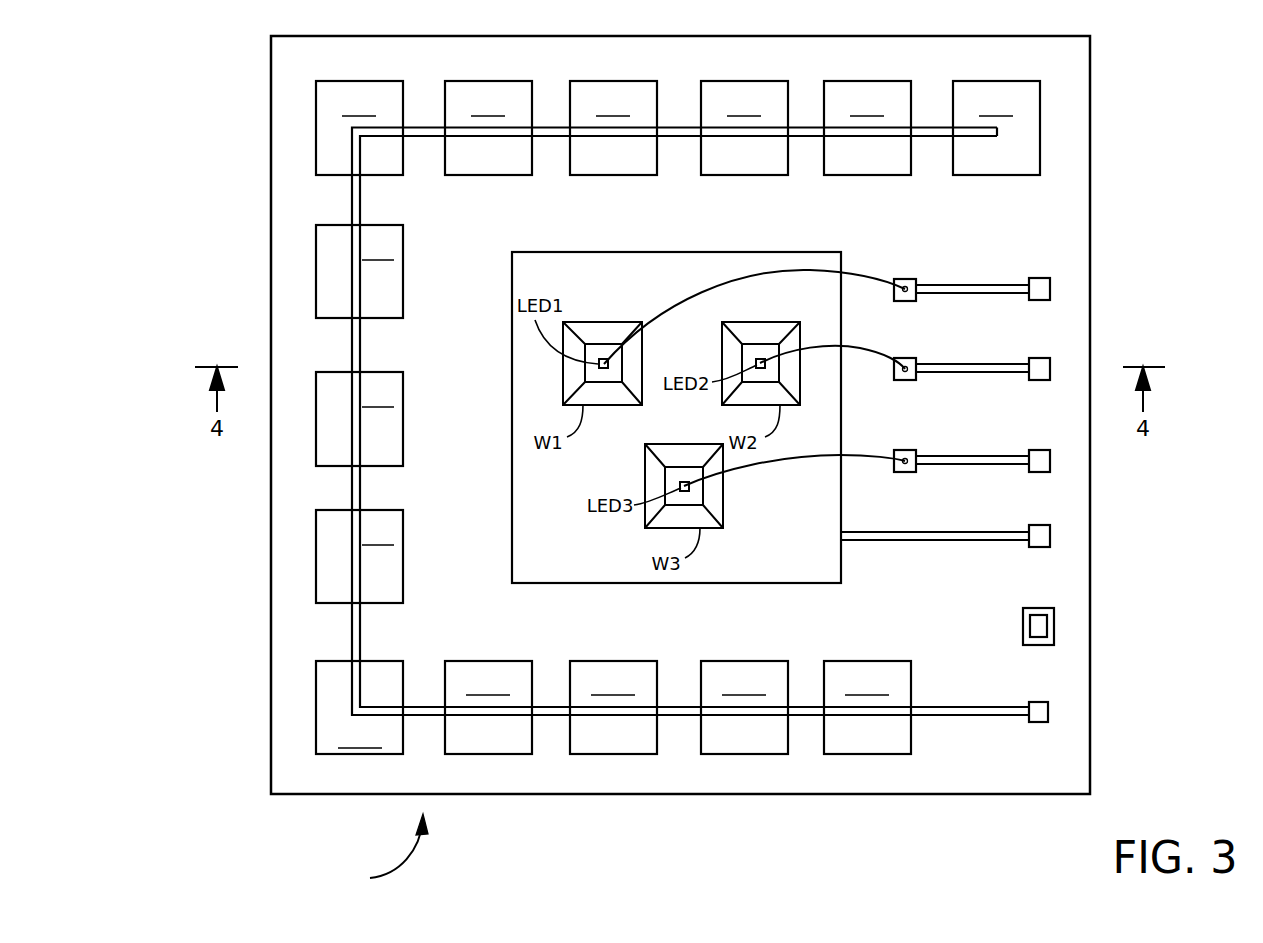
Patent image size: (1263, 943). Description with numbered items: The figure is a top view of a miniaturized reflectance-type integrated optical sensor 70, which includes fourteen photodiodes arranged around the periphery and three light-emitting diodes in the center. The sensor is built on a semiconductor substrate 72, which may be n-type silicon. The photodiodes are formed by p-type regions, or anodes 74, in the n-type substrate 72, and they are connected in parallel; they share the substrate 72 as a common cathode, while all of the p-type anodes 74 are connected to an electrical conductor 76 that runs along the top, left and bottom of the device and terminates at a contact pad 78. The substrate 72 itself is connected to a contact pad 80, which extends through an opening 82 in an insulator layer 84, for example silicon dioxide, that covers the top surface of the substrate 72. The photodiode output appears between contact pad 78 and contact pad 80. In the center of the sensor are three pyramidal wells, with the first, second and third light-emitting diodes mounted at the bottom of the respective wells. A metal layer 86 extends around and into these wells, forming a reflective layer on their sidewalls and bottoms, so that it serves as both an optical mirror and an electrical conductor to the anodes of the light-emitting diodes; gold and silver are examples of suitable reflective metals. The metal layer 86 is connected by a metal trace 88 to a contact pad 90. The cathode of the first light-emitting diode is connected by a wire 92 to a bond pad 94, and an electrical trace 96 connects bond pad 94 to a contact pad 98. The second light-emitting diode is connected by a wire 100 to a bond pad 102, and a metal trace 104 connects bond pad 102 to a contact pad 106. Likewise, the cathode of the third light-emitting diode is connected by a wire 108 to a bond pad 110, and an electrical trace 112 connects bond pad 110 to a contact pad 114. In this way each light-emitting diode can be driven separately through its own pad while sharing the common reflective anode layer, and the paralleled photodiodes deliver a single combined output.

The integrated optical sensor 70 is at (383, 851).
The semiconductor substrate 72 is at (1092, 766).
The p-type regions (anodes) 74 is at (382, 175).
The electrical conductor 76 is at (673, 127).
The contact pad 78 is at (1038, 723).
The contact pad 80 is at (1033, 624).
The opening 82 is at (1038, 646).
The insulator layer 84 is at (936, 618).
The metal layer 86 is at (581, 290).
The metal trace 88 is at (920, 530).
The contact pad 90 is at (1038, 547).
The wire 92 is at (717, 286).
The bond pad 94 is at (915, 279).
The electrical trace 96 is at (937, 284).
The contact pad 98 is at (1030, 302).
The wire 100 is at (851, 345).
The bond pad 102 is at (915, 358).
The metal trace 104 is at (937, 363).
The contact pad 106 is at (1030, 381).
The wire 108 is at (830, 453).
The bond pad 110 is at (915, 450).
The electrical trace 112 is at (937, 455).
The contact pad 114 is at (1030, 473).